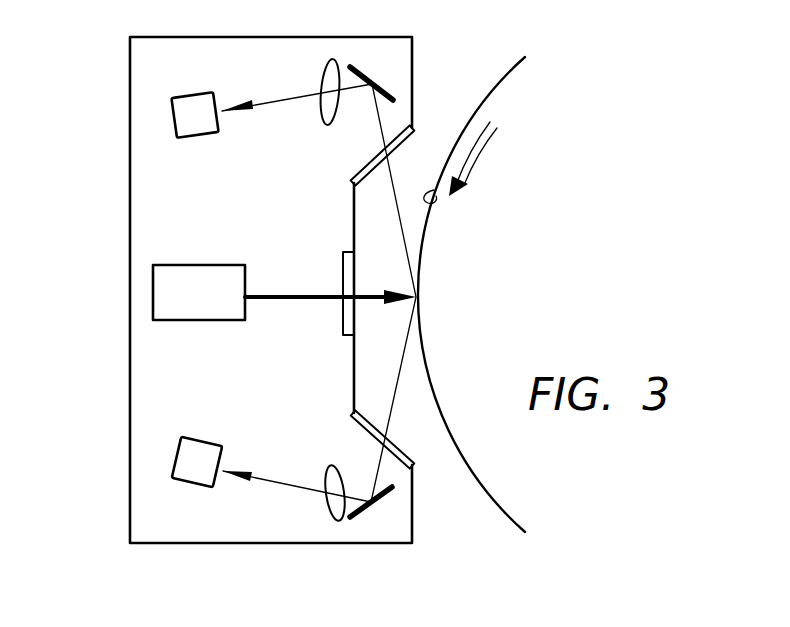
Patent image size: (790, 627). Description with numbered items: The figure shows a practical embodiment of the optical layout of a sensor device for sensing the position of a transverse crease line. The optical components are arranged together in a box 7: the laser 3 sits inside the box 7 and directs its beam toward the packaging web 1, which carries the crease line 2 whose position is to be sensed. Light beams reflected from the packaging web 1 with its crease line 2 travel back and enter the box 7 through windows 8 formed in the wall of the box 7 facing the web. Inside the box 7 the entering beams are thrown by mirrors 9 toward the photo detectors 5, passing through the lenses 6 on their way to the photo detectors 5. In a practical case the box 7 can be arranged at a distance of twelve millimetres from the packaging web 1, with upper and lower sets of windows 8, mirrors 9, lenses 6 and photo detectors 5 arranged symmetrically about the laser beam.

The packaging web 1 is at (420, 258).
The crease line 2 is at (428, 200).
The laser 3 is at (166, 287).
The photo detectors 5 is at (182, 116).
The lenses 6 is at (322, 122).
The box 7 is at (130, 203).
The windows 8 is at (352, 176).
The mirrors 9 is at (372, 83).